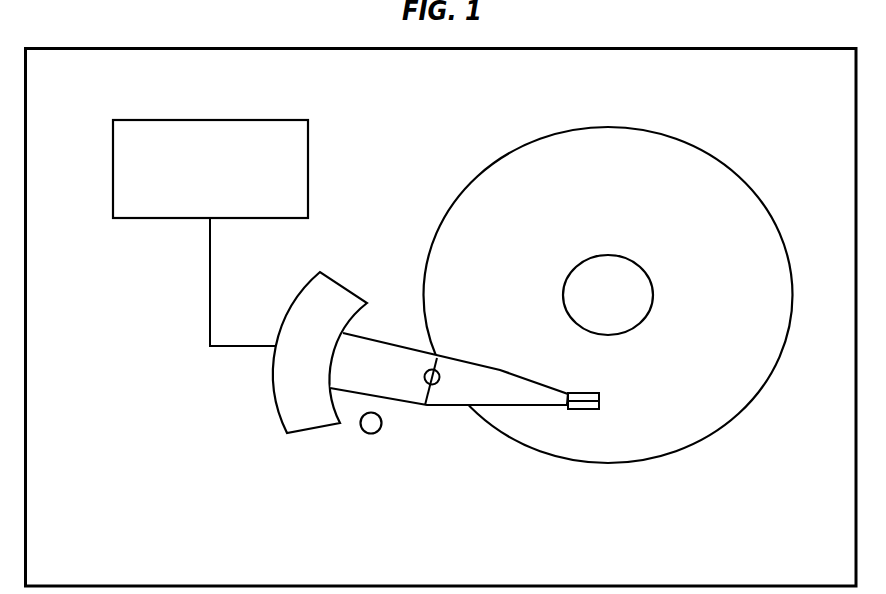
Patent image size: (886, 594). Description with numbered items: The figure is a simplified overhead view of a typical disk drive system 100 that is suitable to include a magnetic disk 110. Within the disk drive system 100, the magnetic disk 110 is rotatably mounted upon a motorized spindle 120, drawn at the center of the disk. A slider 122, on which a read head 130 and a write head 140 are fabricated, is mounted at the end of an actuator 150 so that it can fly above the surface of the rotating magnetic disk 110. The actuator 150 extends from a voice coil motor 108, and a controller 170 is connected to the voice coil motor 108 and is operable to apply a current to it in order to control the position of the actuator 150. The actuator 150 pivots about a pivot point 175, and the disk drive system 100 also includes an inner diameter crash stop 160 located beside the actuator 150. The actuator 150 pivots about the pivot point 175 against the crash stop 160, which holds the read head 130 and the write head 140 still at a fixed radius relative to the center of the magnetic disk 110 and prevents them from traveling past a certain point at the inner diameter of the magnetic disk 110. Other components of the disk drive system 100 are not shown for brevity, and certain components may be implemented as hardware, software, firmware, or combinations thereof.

The disk drive system 100 is at (424, 104).
The voice coil motor (VCM) 108 is at (295, 433).
The magnetic disk 110 is at (629, 212).
The spindle 120 is at (652, 293).
The slider 122 is at (600, 410).
The read head 130 is at (597, 393).
The write head 140 is at (583, 410).
The actuator 150 is at (405, 405).
The crash stop 160 is at (371, 434).
The controller 170 is at (229, 190).
The pivot point 175 is at (425, 372).